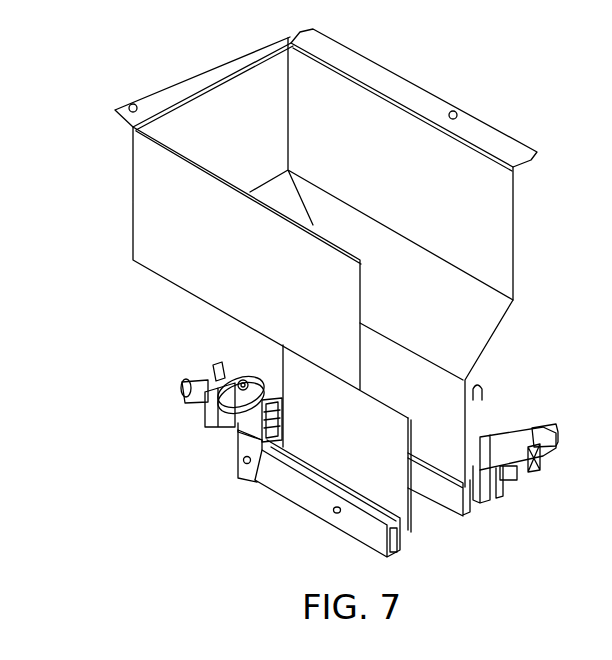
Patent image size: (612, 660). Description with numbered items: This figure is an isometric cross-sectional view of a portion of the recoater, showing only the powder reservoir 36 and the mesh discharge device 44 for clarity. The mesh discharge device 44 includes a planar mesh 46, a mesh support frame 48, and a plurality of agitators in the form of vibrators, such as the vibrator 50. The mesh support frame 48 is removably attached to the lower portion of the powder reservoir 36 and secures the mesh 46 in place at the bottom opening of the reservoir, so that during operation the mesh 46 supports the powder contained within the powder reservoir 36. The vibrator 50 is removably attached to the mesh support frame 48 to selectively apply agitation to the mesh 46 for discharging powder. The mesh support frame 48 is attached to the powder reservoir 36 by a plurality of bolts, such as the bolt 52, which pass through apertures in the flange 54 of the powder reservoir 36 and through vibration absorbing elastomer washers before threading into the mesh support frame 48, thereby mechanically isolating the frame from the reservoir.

The powder reservoir 36 is at (166, 202).
The mesh discharge device 44 is at (236, 510).
The planar mesh 46 is at (430, 517).
The mesh support frame 48 is at (365, 533).
The vibrator 50 is at (217, 415).
The bolt 52 is at (275, 402).
The flange 54 is at (275, 442).